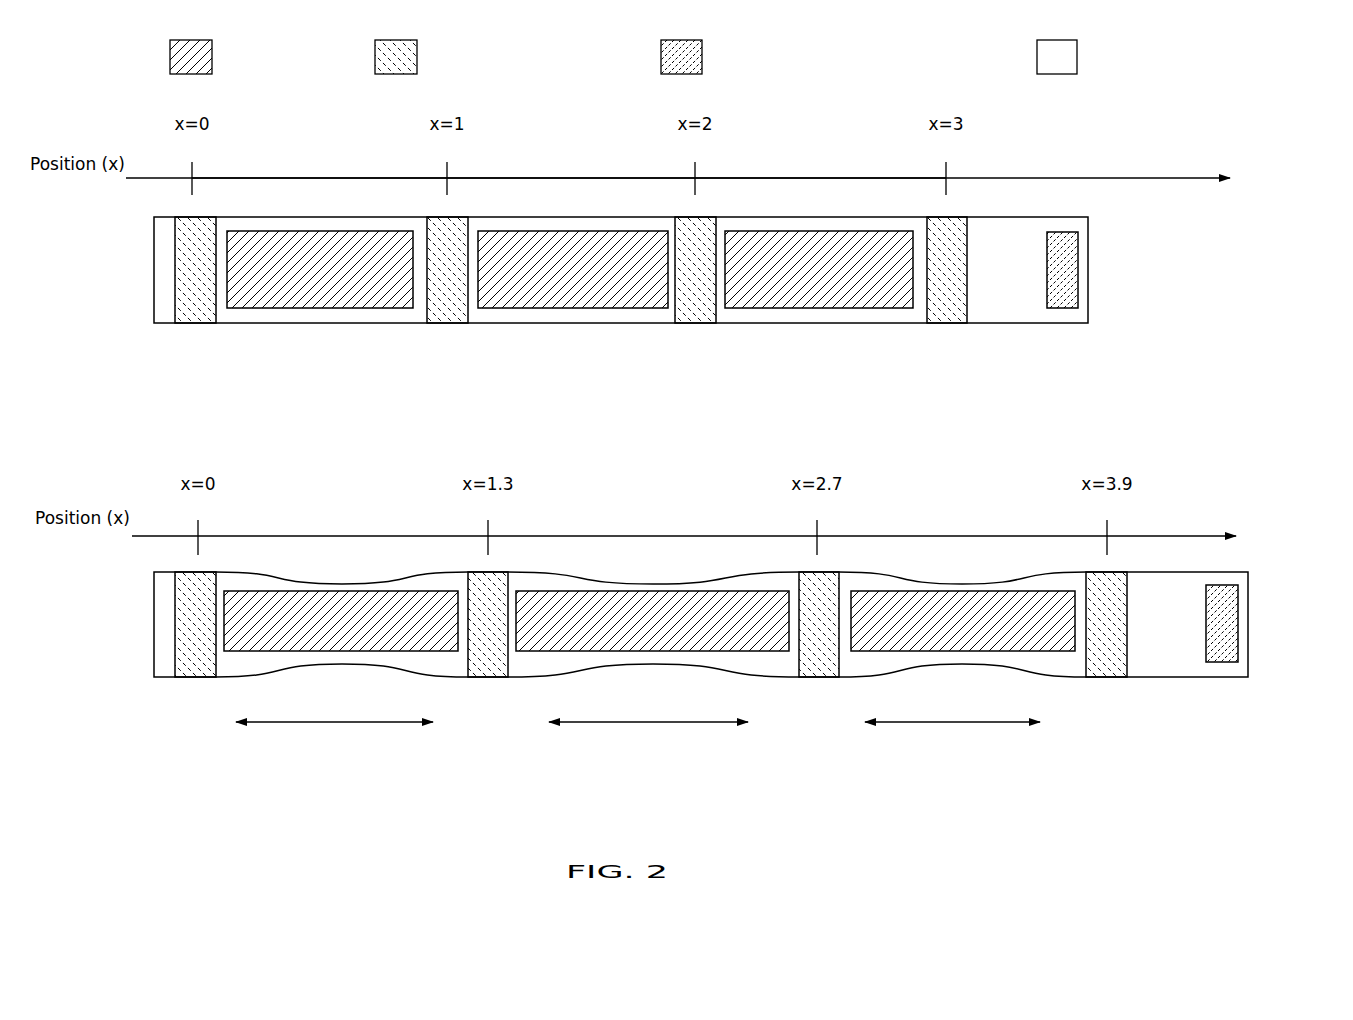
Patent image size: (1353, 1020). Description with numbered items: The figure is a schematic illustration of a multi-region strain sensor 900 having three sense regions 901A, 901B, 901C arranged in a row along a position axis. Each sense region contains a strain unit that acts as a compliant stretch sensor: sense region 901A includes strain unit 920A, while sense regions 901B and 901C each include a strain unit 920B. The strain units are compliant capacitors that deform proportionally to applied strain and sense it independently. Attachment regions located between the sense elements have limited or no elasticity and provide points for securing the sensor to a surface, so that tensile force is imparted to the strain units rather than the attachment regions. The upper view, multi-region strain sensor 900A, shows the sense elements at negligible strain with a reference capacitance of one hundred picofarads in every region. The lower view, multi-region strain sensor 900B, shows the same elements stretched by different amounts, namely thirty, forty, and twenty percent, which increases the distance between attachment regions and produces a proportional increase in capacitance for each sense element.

The multi-region strain sensor 900 is at (84, 82).
The multi-region strain sensor in a state of negligible strain 900A is at (688, 307).
The multi-region strain sensor under strain 900B is at (670, 677).
The sense region 901A is at (319, 151).
The sense region 901B is at (571, 151).
The sense region 901C is at (820, 151).
The strain unit 920A is at (320, 314).
The strain unit 920B is at (695, 314).